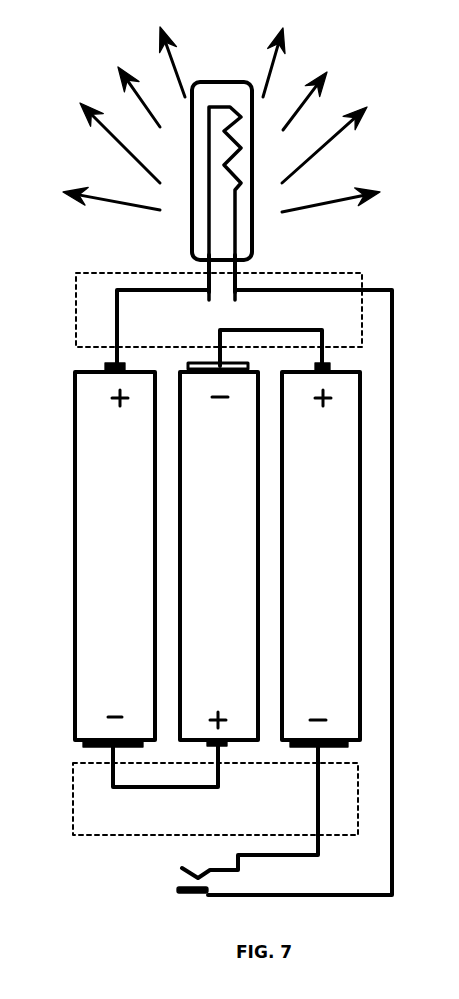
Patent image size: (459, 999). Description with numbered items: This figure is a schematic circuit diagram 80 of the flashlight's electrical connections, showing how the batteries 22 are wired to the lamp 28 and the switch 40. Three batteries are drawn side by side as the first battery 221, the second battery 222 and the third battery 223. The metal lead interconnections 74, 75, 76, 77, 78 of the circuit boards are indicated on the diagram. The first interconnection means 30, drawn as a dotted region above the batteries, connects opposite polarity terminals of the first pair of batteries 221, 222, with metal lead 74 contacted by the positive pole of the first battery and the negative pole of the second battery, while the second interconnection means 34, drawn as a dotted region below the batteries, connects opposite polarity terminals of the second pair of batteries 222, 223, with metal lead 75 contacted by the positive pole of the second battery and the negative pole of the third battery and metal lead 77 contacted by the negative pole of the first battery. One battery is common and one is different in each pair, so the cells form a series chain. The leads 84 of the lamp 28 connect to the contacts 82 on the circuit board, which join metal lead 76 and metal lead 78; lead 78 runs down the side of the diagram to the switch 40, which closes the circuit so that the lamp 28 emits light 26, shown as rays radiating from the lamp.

The batteries 22 is at (217, 555).
The first battery 221 is at (352, 647).
The second battery 222 is at (257, 647).
The third battery 223 is at (157, 647).
The light 26 is at (360, 182).
The lamp 28 is at (215, 80).
The first interconnection means 30 is at (93, 273).
The second interconnection means 34 is at (92, 835).
The switch 40 is at (193, 897).
The metal lead 74 is at (292, 328).
The metal lead 75 is at (188, 790).
The metal lead 76 is at (138, 295).
The metal lead 77 is at (317, 777).
The metal lead 78 is at (378, 292).
The schematic circuit diagram 80 is at (124, 870).
The contacts 82 is at (232, 277).
The lamp leads 84 is at (207, 268).